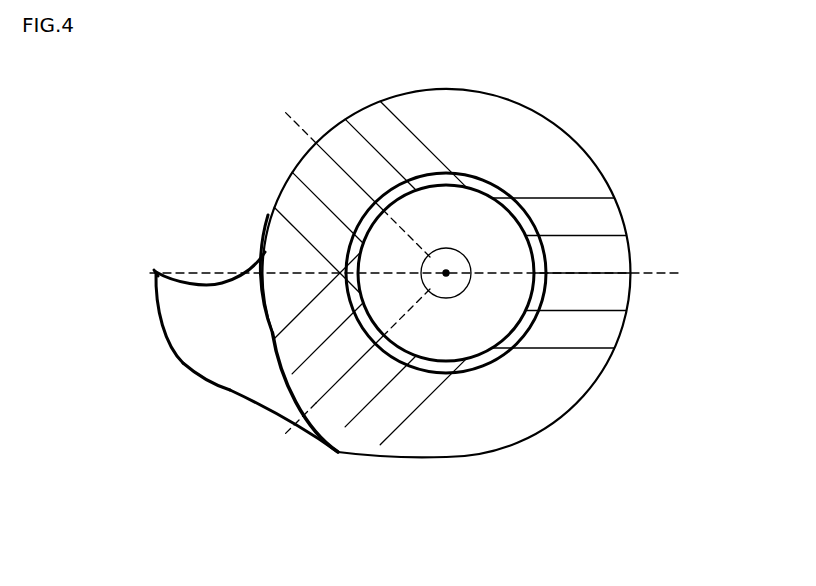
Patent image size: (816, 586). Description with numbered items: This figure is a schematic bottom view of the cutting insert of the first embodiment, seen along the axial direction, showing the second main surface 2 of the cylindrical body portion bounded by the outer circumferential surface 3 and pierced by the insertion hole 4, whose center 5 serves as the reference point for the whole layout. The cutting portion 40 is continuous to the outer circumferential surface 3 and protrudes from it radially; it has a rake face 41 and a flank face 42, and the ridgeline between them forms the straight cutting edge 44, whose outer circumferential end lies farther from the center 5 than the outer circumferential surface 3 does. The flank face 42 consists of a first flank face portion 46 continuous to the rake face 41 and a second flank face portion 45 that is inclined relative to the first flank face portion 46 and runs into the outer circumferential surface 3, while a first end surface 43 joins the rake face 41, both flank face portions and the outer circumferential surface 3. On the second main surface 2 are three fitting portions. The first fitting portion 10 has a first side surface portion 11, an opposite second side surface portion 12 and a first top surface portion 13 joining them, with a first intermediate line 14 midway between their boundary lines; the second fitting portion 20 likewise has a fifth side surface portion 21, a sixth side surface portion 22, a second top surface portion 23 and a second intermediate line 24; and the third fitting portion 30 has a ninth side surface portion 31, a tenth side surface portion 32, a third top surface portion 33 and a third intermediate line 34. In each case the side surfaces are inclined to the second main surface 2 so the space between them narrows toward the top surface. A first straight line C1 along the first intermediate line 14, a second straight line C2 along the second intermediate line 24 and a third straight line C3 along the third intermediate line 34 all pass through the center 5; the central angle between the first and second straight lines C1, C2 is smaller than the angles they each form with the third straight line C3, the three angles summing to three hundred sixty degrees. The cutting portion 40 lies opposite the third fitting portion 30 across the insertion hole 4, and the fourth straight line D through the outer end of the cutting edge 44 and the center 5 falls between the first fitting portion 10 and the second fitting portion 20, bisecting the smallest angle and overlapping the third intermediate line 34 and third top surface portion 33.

The second main surface 2 is at (487, 120).
The outer circumferential surface 3 is at (586, 395).
The insertion hole 4 is at (488, 208).
The center of insertion hole 5 is at (446, 262).
The first fitting portion 10 is at (352, 394).
The first side surface portion 11 is at (406, 430).
The second side surface portion 12 is at (277, 385).
The first top surface portion 13 is at (340, 400).
The first intermediate line 14 is at (340, 370).
The second fitting portion 20 is at (352, 163).
The fifth side surface portion 21 is at (300, 207).
The sixth side surface portion 22 is at (380, 126).
The second top surface portion 23 is at (350, 149).
The second intermediate line 24 is at (340, 160).
The third fitting portion 30 is at (620, 273).
The ninth side surface portion 31 is at (593, 215).
The tenth side surface portion 32 is at (620, 321).
The third top surface portion 33 is at (597, 257).
The third intermediate line 34 is at (600, 273).
The cutting portion 40 is at (187, 339).
The rake face 41 is at (194, 268).
The flank face 42 is at (205, 392).
The first end surface 43 is at (203, 328).
The cutting edge 44 is at (155, 272).
The second flank face portion 45 is at (203, 380).
The first flank face portion 46 is at (160, 333).
The first straight line C1 is at (422, 296).
The second straight line C2 is at (413, 237).
The third straight line C3 is at (514, 197).
The fourth straight line D is at (210, 272).